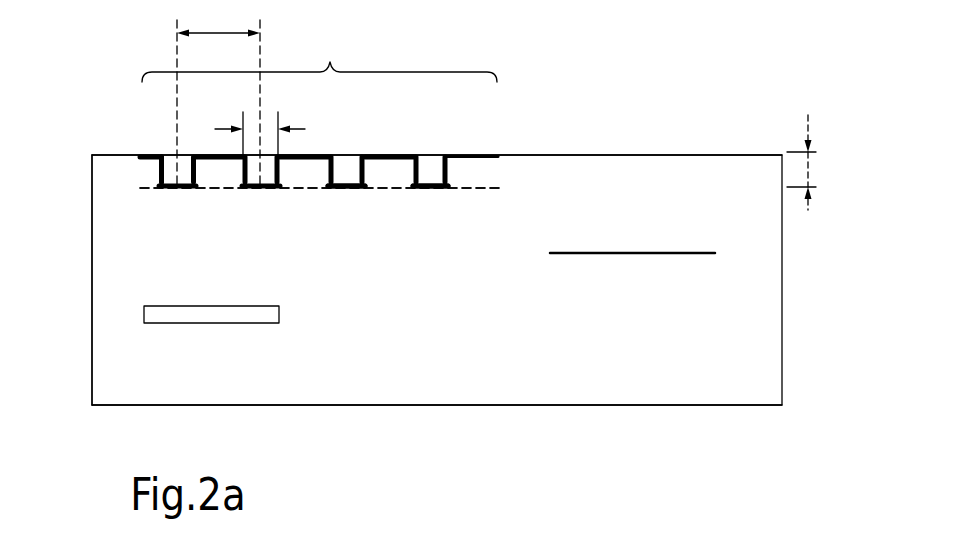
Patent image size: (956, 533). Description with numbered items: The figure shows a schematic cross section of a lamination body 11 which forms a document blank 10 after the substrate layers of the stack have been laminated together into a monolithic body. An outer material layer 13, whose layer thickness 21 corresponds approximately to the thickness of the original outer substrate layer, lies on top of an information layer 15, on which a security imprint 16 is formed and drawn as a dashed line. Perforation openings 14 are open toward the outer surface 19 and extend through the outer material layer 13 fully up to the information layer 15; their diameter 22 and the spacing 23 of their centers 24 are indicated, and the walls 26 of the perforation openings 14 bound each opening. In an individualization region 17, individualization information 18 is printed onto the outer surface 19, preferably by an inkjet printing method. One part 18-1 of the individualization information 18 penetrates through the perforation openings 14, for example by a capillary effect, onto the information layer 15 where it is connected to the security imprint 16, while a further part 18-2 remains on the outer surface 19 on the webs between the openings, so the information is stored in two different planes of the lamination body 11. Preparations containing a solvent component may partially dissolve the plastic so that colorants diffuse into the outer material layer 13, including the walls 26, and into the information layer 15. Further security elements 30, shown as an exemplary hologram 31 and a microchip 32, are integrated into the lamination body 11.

The document blank 10 is at (87, 102).
The lamination body 11 is at (114, 398).
The outer material layer 13 is at (525, 168).
The perforation openings 14 is at (185, 155).
The information layer 15 is at (120, 192).
The security imprint 16 is at (215, 190).
The individualization region 17 is at (319, 52).
The individualization information 18 is at (397, 154).
The part of the individualization information 18-1 is at (347, 190).
The further part of the individualization information 18-2 is at (313, 152).
The outer surface 19 is at (507, 144).
The layer thickness 21 is at (808, 170).
The diameter 22 is at (268, 124).
The spacing 23 is at (218, 93).
The center 24 is at (177, 158).
The walls 26 is at (146, 170).
The security elements 30 is at (280, 343).
The hologram 31 is at (670, 253).
The microchip 32 is at (200, 318).